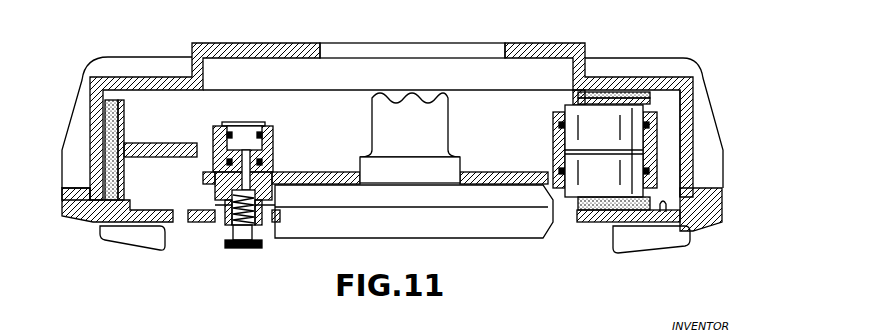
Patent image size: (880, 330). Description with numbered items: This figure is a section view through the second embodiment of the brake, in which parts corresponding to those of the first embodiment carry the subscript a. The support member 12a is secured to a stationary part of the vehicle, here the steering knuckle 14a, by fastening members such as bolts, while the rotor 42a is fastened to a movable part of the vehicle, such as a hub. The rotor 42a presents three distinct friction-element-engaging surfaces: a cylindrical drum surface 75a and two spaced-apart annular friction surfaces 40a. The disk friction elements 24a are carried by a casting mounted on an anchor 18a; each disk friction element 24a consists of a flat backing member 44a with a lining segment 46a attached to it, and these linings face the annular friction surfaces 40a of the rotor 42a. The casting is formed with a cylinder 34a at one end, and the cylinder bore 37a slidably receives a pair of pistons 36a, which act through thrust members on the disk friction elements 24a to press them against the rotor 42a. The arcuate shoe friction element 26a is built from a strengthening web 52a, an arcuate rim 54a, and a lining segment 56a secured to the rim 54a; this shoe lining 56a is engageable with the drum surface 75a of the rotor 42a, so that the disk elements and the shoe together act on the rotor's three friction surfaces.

The support member 12a is at (312, 172).
The steering knuckle 14a is at (305, 232).
The anchor 18a is at (240, 128).
The disk friction element 24a is at (598, 96).
The arcuate shoe friction element 26a is at (125, 190).
The cylinder 34a is at (556, 126).
The piston 36a is at (578, 160).
The cylinder bore 37a is at (576, 98).
The annular friction surface 40a is at (653, 92).
The rotor 42a is at (712, 145).
The flat backing member 44a is at (586, 224).
The lining segment 46a is at (620, 95).
The strengthening web 52a is at (157, 148).
The arcuate rim 54a is at (128, 113).
The lining segment 56a is at (106, 127).
The drum surface 75a is at (670, 176).